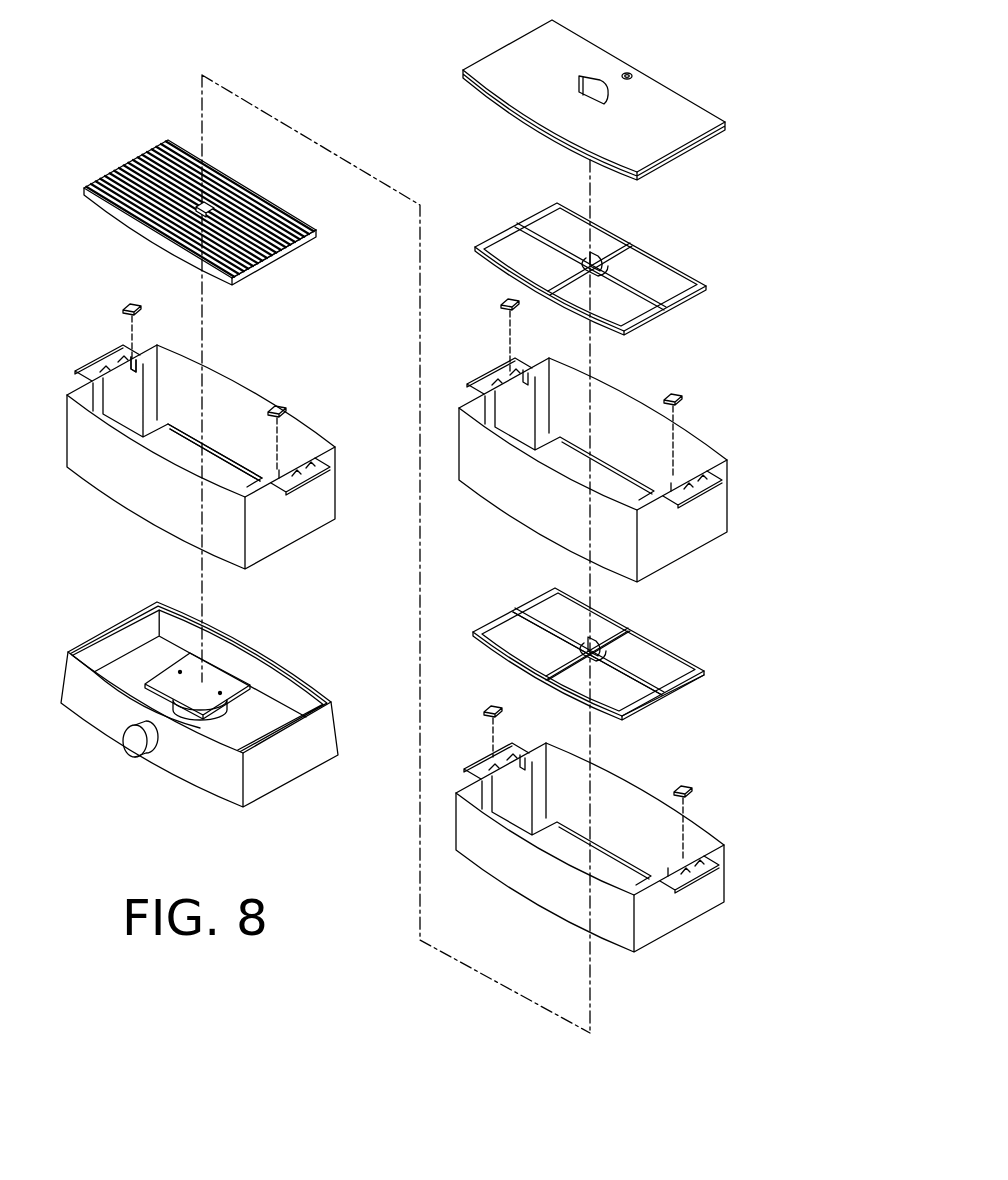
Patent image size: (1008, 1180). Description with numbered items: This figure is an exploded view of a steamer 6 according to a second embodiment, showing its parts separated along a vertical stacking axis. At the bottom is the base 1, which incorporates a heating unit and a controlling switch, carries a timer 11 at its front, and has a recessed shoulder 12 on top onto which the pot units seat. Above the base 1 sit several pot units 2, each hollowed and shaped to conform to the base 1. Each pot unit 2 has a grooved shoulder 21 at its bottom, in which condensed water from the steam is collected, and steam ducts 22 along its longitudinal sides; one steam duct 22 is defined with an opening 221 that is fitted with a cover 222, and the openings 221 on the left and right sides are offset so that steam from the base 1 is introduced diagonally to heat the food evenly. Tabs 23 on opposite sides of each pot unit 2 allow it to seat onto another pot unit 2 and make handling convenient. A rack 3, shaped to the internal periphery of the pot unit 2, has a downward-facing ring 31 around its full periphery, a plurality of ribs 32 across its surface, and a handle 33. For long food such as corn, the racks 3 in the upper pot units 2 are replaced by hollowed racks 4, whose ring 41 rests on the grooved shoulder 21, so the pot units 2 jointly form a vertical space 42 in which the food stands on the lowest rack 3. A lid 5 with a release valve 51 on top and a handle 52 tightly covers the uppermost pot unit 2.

The base 1 is at (187, 687).
The timer 11 is at (130, 743).
The recessed shoulder 12 is at (117, 627).
The pot unit 2 is at (414, 624).
The grooved shoulder 21 is at (222, 445).
The steam duct 22 is at (213, 415).
The opening 221 is at (148, 368).
The cover 222 is at (128, 302).
The tab 23 is at (290, 483).
The rack 3 is at (209, 182).
The ring 31 is at (293, 252).
The rib 32 is at (177, 140).
The handle 33 is at (205, 200).
The hollowed rack 4 is at (627, 463).
The ring 41 is at (685, 688).
The vertical space 42 is at (670, 672).
The lid 5 is at (594, 90).
The release valve 51 is at (632, 72).
The handle 52 is at (590, 85).
The steamer 6 is at (412, 133).